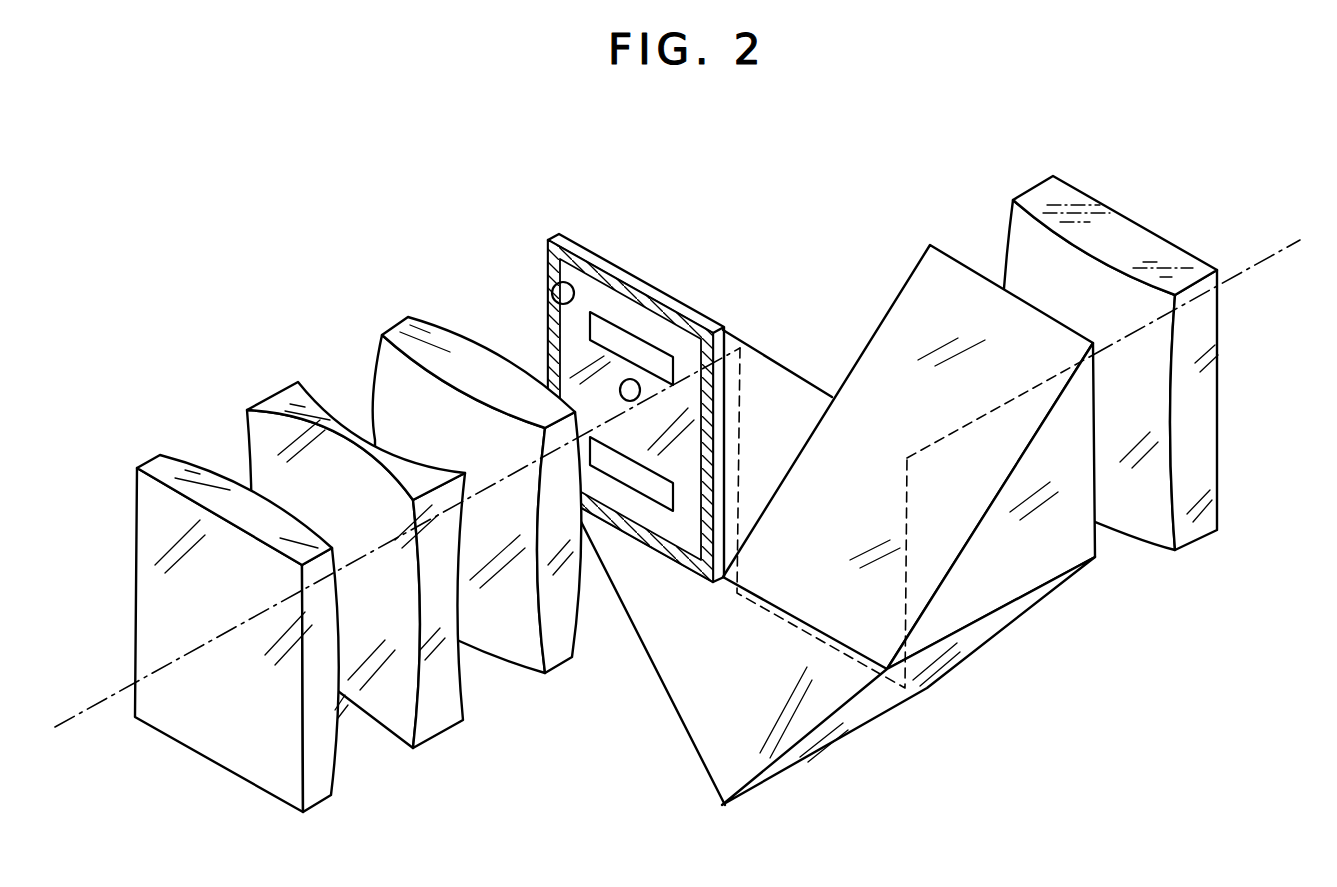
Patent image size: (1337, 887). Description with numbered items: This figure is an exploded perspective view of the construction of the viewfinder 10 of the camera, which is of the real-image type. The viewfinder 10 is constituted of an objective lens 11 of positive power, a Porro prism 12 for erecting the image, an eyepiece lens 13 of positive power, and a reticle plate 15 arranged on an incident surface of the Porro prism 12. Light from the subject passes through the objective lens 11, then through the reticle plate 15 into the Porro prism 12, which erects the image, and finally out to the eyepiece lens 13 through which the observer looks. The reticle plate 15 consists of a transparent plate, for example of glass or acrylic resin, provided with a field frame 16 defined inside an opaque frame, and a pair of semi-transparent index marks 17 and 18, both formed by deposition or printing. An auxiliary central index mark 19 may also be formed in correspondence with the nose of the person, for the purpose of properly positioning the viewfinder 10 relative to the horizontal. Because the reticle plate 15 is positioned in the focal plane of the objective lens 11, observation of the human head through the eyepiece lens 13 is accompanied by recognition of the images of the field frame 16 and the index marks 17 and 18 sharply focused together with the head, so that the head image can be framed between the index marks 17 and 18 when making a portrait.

The viewfinder 10 is at (893, 715).
The objective lens 11 is at (308, 828).
The Porro prism 12 is at (720, 766).
The eyepiece lens 13 is at (1128, 237).
The reticle plate 15 is at (637, 362).
The field frame 16 is at (554, 282).
The index mark 17 is at (645, 350).
The index mark 18 is at (665, 493).
The auxiliary central index mark 19 is at (621, 384).